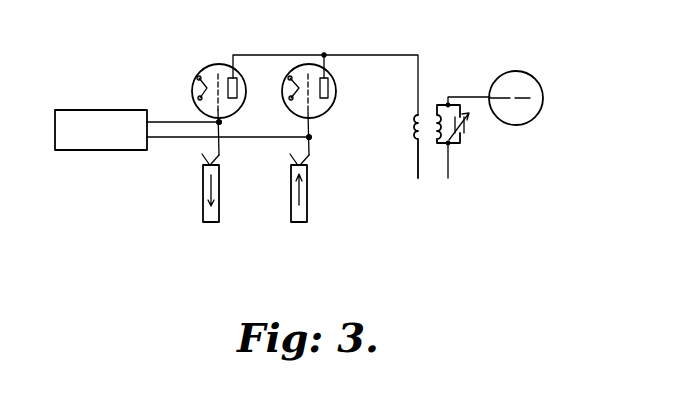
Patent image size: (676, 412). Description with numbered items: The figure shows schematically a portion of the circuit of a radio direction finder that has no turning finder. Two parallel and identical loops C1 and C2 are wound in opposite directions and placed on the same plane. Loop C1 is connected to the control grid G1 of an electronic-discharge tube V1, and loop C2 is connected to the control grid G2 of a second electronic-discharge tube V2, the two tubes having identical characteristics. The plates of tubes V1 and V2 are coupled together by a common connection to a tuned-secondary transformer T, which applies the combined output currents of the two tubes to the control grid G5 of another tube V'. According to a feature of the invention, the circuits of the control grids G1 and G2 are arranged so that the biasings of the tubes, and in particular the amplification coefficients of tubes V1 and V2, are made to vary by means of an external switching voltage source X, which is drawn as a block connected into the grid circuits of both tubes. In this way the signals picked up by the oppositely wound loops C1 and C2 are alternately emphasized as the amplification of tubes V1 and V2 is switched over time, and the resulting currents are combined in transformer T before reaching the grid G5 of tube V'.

The external switching voltage source X is at (117, 110).
The electronic-discharge tube V1 is at (199, 71).
The electronic-discharge tube V2 is at (336, 87).
The control grid G1 is at (237, 107).
The control grid G2 is at (323, 108).
The loop C1 is at (205, 212).
The loop C2 is at (299, 212).
The tuned-secondary transformer T is at (441, 122).
The control grid G5 is at (491, 97).
The tube V' is at (516, 108).